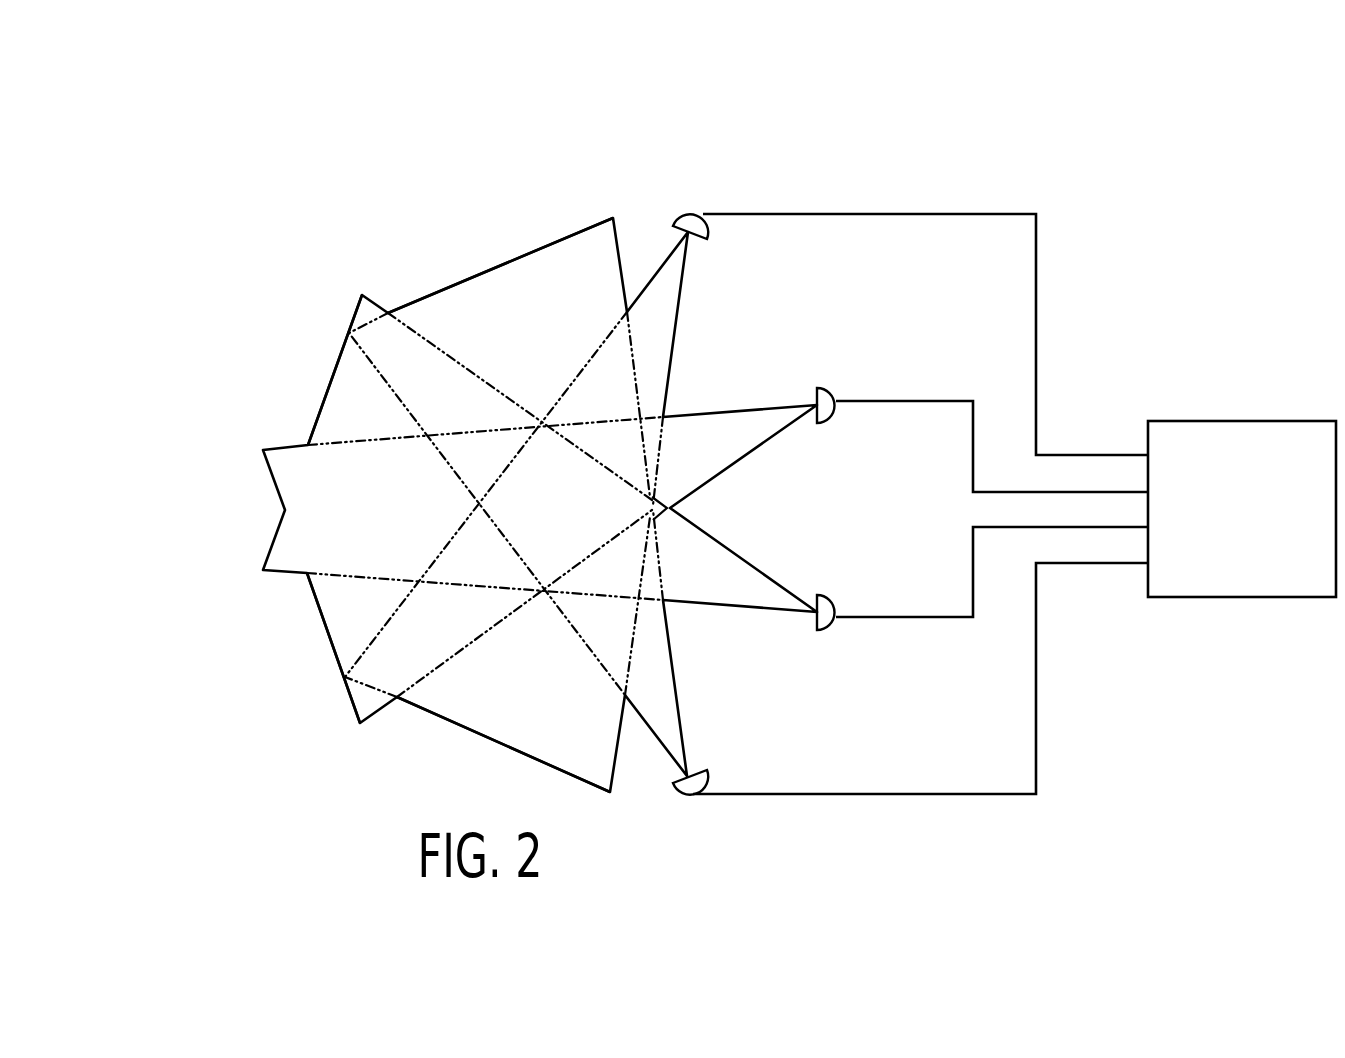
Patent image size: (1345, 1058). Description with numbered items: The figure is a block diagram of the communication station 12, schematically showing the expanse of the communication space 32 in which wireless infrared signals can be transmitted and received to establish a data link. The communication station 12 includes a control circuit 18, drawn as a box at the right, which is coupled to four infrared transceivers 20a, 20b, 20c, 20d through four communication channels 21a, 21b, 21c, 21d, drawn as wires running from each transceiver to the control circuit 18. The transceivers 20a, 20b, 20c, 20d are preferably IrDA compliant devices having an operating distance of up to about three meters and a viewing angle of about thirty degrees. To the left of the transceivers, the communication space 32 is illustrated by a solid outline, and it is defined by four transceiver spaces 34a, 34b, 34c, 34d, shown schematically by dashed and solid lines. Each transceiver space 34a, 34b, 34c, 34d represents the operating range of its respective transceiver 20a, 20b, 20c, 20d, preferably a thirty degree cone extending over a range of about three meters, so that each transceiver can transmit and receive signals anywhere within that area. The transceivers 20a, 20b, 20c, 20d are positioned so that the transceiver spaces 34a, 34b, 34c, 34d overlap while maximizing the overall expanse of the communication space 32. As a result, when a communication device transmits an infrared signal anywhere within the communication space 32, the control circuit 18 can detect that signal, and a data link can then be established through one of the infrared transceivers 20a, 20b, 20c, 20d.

The communication station 12 is at (1000, 122).
The control circuit 18 is at (1242, 420).
The infrared transceiver 20a is at (709, 236).
The infrared transceiver 20b is at (838, 420).
The infrared transceiver 20c is at (845, 600).
The infrared transceiver 20d is at (708, 781).
The communication channel 21a is at (868, 214).
The communication channel 21b is at (900, 401).
The communication channel 21c is at (900, 618).
The communication channel 21d is at (864, 796).
The communication space 32 is at (230, 504).
The transceiver space 34a is at (518, 712).
The transceiver space 34b is at (364, 617).
The transceiver space 34c is at (344, 408).
The transceiver space 34d is at (495, 302).